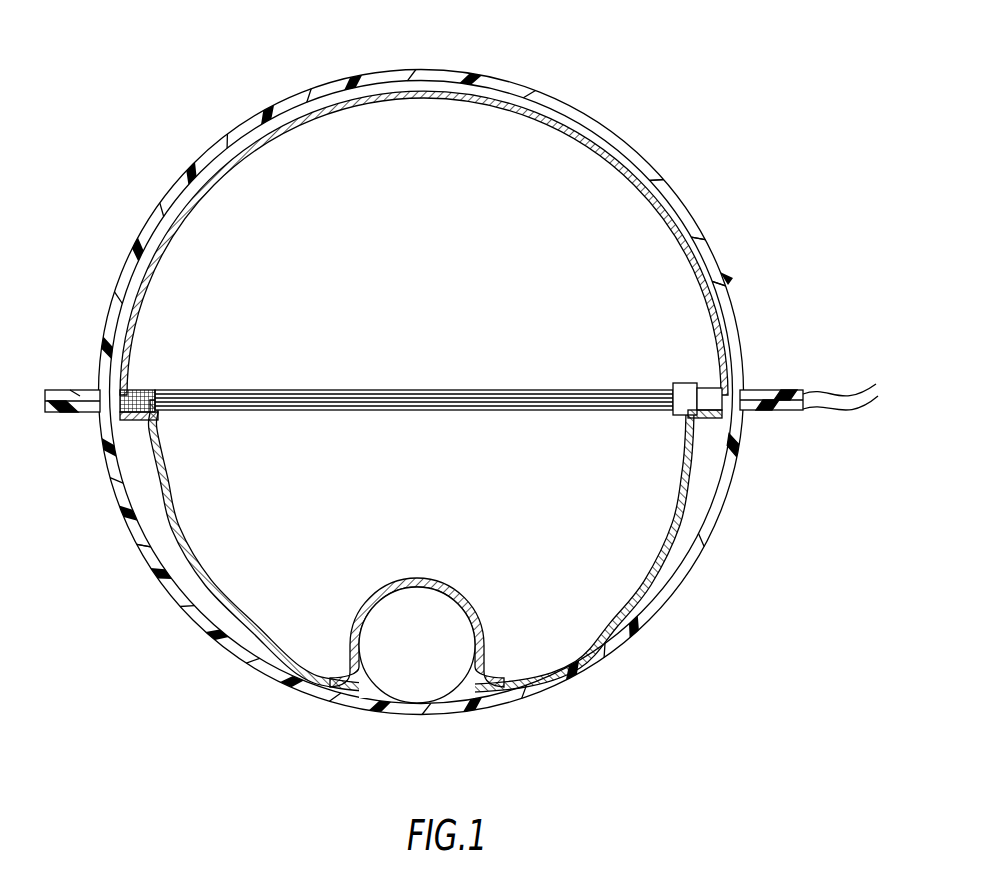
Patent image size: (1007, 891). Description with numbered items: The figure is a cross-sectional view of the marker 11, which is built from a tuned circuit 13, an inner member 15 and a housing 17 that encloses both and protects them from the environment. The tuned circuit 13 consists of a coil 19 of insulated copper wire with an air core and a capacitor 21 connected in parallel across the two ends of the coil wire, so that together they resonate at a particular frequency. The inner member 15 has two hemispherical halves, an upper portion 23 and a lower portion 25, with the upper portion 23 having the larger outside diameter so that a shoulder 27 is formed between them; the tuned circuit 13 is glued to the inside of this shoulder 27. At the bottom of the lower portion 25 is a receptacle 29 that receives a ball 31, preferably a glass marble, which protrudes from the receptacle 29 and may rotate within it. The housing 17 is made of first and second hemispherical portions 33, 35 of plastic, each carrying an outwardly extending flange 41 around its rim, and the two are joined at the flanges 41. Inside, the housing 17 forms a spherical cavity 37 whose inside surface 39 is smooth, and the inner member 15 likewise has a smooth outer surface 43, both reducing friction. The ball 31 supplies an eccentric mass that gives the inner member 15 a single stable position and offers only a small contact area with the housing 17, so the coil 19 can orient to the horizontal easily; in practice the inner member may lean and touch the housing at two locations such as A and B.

The marker 11 is at (190, 130).
The tuned circuit 13 is at (180, 388).
The inner member 15 is at (655, 180).
The housing 17 is at (737, 320).
The coil 19 is at (470, 390).
The capacitor 21 is at (690, 382).
The upper portion 23 is at (548, 103).
The lower portion 25 is at (658, 563).
The shoulder 27 is at (142, 418).
The receptacle 29 is at (464, 613).
The ball 31 is at (395, 650).
The first hemispherical portion 33 is at (452, 68).
The second hemispherical portion 35 is at (165, 585).
The cavity 37 is at (633, 608).
The inside surface 39 is at (730, 495).
The flange 41 is at (859, 392).
The outer surface 43 is at (685, 234).
The contact location A is at (404, 703).
The contact location B is at (745, 430).